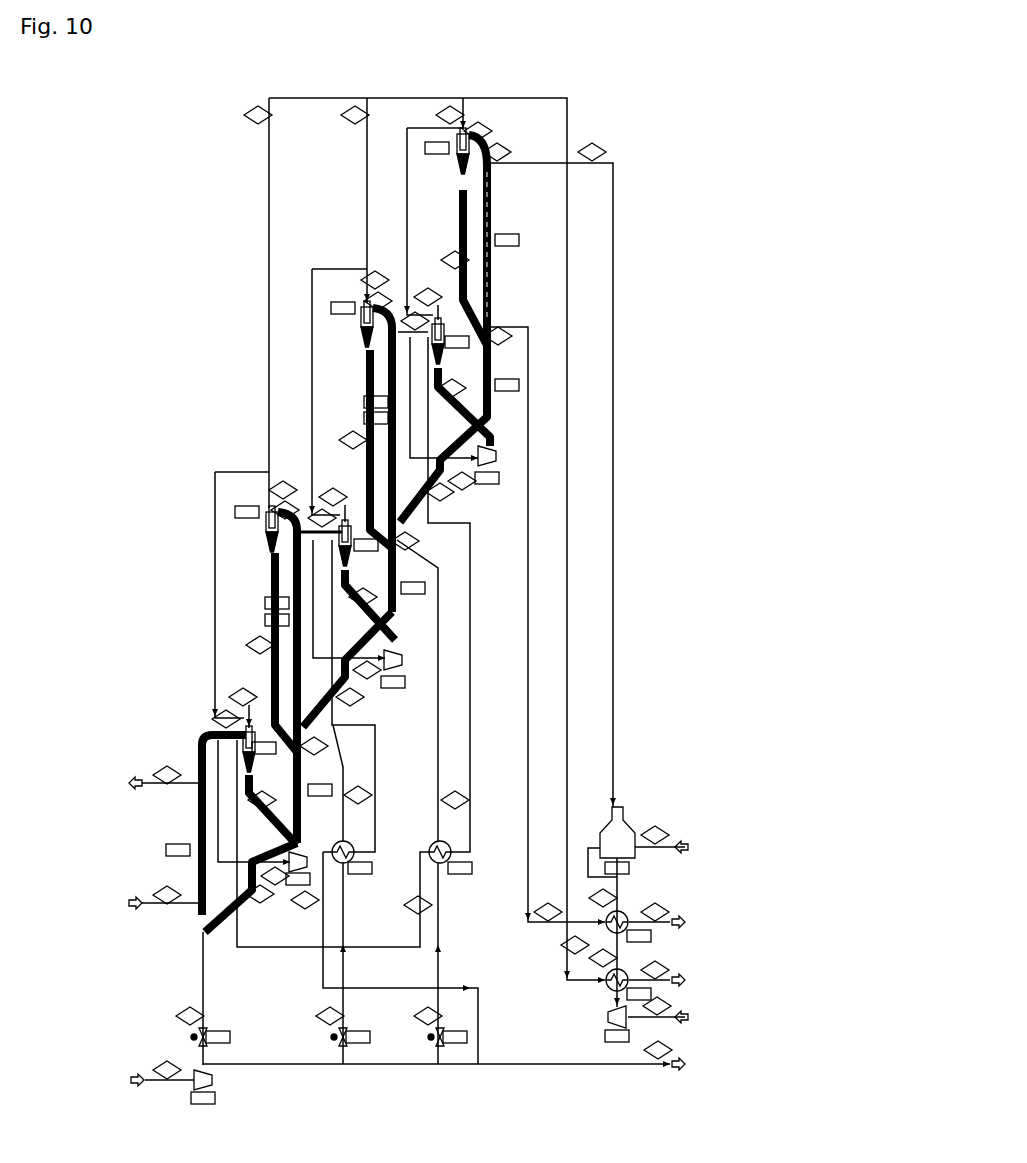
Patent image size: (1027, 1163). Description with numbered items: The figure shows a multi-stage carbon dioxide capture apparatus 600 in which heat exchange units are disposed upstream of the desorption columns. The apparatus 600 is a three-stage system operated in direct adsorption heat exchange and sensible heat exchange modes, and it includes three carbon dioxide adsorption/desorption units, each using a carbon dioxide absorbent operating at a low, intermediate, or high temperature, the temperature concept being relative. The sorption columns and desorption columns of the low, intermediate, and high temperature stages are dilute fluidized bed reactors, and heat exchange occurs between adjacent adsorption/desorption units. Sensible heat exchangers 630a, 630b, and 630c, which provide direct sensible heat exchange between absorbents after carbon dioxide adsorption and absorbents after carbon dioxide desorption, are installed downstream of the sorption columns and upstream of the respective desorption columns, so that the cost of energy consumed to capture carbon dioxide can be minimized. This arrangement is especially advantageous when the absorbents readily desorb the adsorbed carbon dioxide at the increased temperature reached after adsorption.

The multi-stage carbon dioxide capture apparatus 600 is at (206, 118).
The heat exchanger 630a is at (316, 768).
The heat exchanger 630b is at (410, 543).
The heat exchanger 630c is at (505, 364).